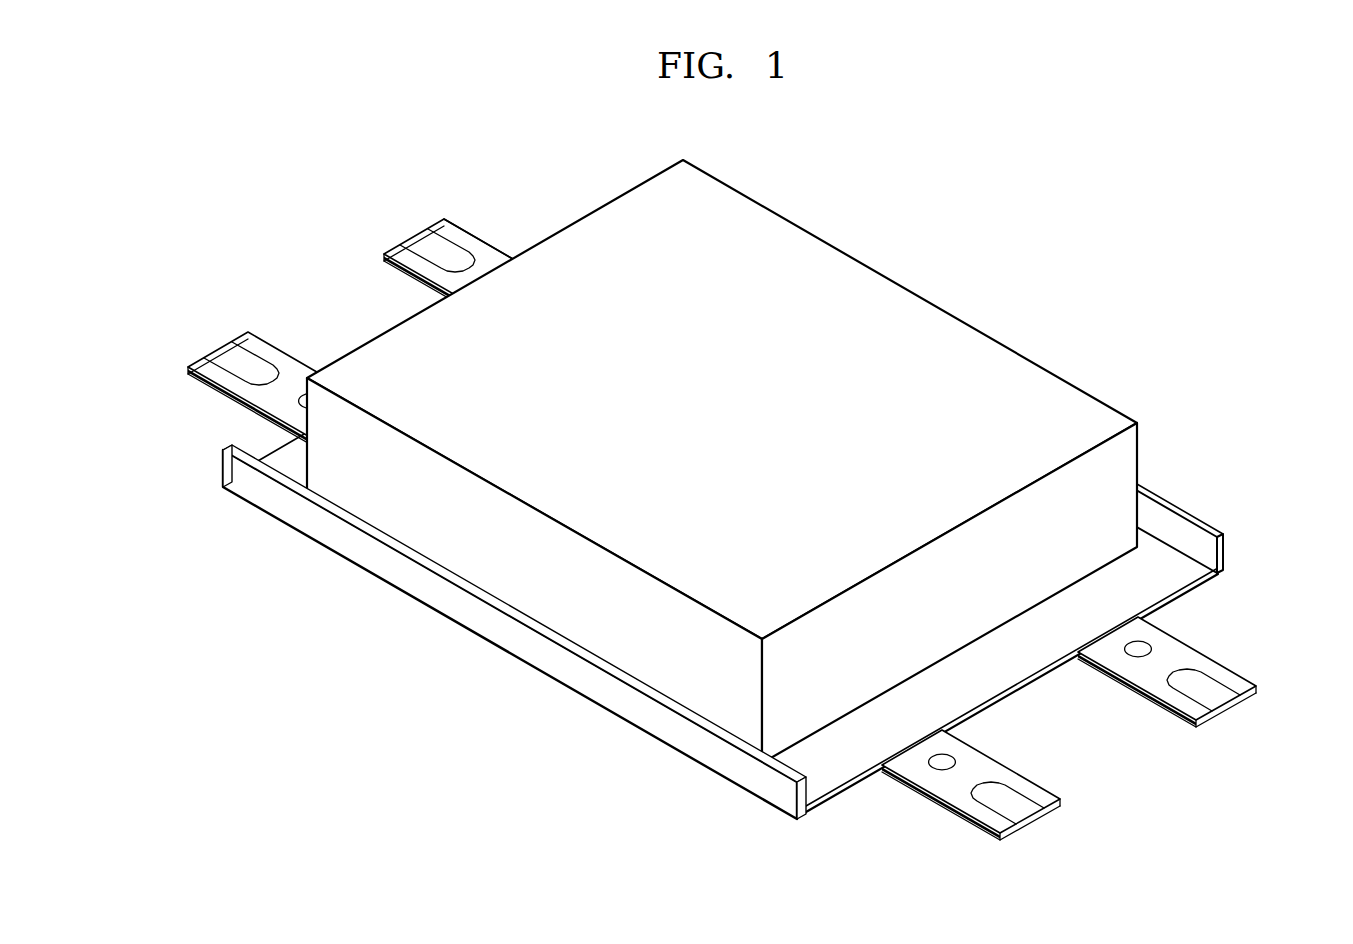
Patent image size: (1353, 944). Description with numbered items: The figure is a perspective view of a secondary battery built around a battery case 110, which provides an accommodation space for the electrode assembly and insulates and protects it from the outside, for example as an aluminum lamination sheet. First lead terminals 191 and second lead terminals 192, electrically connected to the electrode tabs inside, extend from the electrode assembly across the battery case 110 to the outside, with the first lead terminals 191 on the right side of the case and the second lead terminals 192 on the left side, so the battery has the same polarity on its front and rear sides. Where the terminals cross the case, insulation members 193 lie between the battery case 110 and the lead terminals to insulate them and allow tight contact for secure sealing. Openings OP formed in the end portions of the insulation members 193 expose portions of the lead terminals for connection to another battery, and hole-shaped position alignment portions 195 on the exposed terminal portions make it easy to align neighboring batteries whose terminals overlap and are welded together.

The battery case 110 is at (948, 325).
The first lead terminal 191 is at (418, 242).
The second lead terminal 192 is at (228, 352).
The insulation member 193 is at (485, 255).
The position alignment portion 195 is at (1143, 645).
The opening OP is at (242, 362).